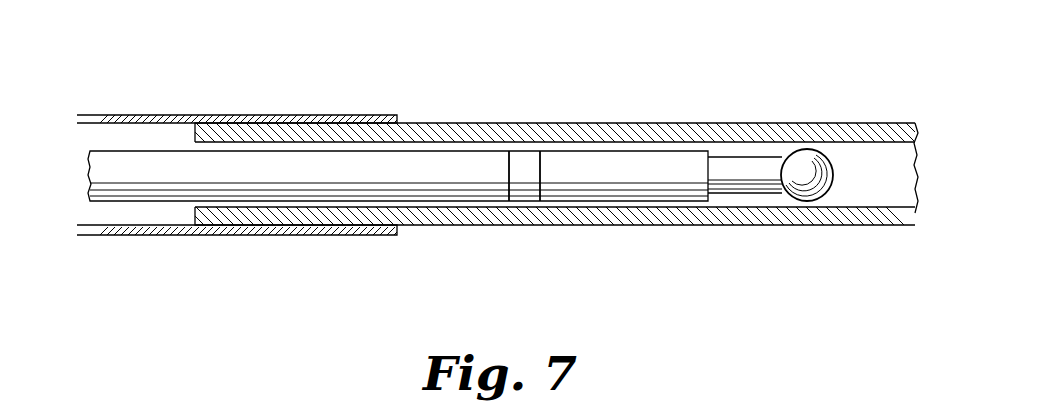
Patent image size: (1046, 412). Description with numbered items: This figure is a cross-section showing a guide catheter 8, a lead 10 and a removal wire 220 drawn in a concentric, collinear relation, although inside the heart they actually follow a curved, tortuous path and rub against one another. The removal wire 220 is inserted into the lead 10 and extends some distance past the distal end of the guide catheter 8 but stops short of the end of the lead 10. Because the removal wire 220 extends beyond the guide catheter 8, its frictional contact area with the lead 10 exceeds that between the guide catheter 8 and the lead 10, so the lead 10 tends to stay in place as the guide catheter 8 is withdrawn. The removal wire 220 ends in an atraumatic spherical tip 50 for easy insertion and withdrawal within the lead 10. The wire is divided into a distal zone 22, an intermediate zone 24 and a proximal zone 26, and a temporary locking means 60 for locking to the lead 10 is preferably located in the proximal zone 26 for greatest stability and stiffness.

The guide catheter 8 is at (318, 114).
The lead 10 is at (338, 217).
The temporary locking means 60 is at (527, 162).
The removal wire 220 is at (618, 151).
The spherical tip 50 is at (828, 166).
The proximal zone 26 is at (605, 243).
The intermediate zone 24 is at (608, 243).
The distal zone 22 is at (830, 243).